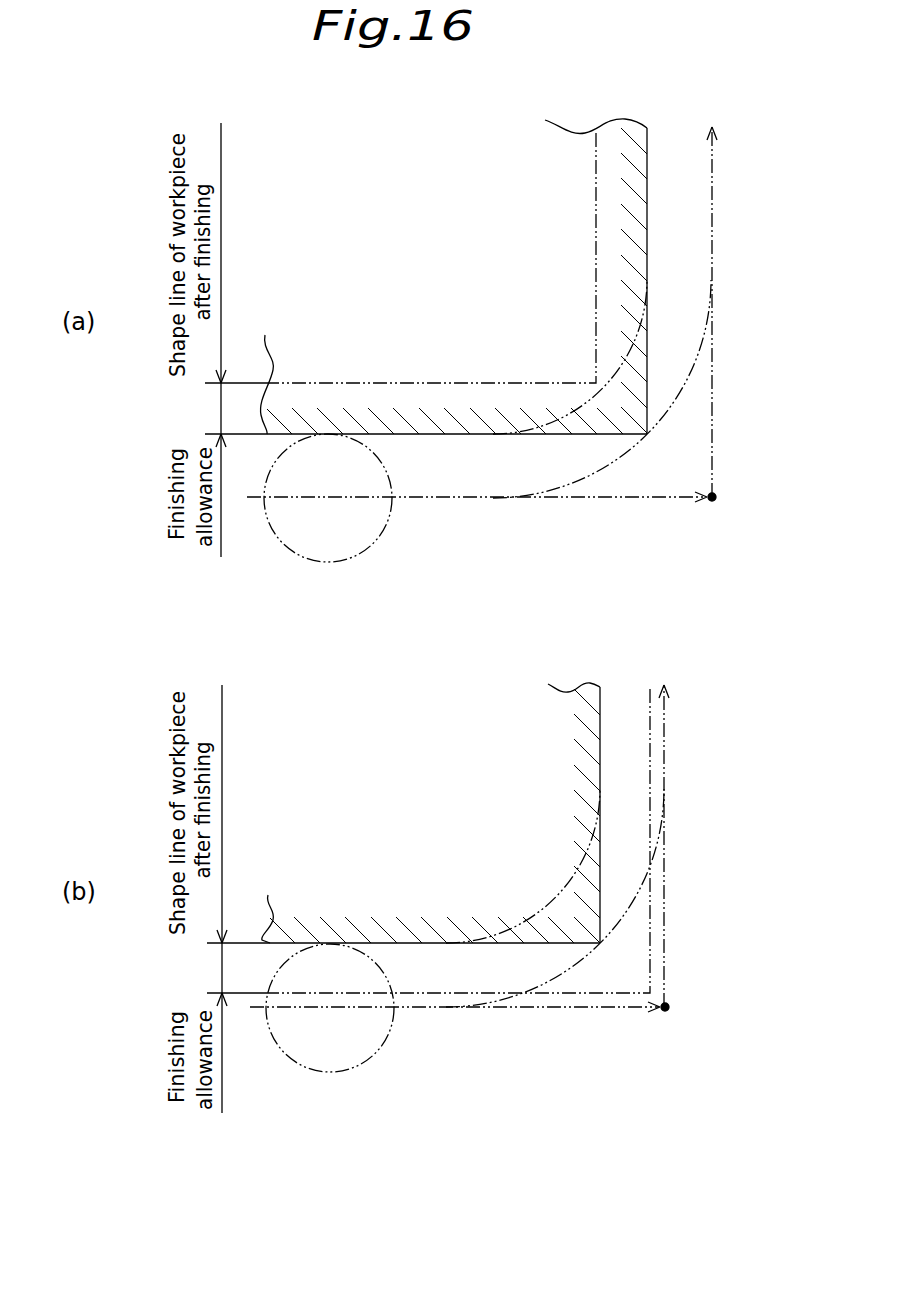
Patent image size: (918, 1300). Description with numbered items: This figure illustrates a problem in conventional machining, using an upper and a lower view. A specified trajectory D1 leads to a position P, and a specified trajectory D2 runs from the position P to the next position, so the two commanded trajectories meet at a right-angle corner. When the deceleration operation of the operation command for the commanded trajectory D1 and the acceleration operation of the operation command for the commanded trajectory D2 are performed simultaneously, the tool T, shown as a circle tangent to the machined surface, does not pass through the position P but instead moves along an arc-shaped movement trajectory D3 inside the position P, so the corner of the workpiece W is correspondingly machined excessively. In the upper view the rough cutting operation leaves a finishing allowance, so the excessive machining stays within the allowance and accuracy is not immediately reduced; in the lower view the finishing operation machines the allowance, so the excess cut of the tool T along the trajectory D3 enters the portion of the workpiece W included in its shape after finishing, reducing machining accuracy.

The tool T is at (330, 563).
The workpiece W is at (479, 434).
The specified trajectory D1 is at (446, 498).
The specified trajectory D2 is at (710, 238).
The arc-shaped movement trajectory D3 is at (597, 473).
The position P is at (717, 496).